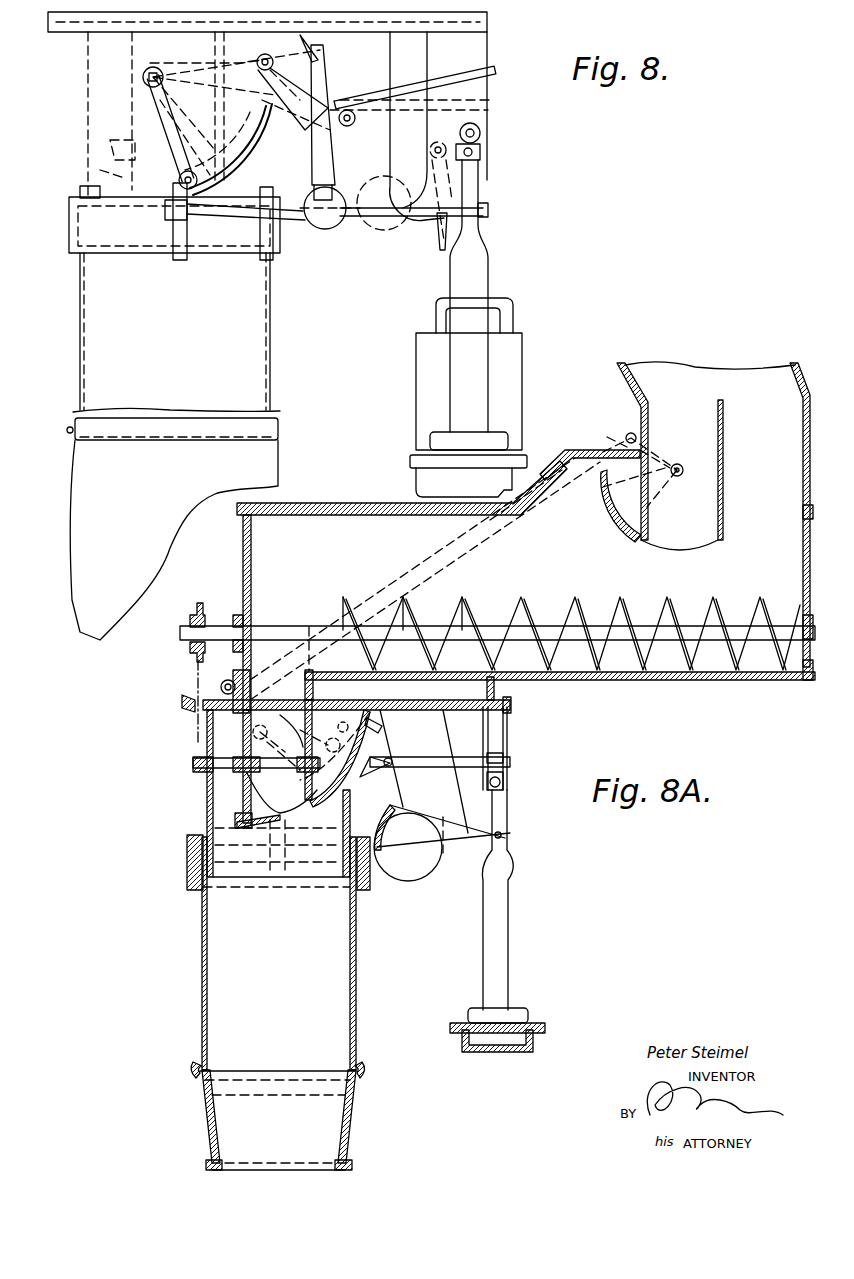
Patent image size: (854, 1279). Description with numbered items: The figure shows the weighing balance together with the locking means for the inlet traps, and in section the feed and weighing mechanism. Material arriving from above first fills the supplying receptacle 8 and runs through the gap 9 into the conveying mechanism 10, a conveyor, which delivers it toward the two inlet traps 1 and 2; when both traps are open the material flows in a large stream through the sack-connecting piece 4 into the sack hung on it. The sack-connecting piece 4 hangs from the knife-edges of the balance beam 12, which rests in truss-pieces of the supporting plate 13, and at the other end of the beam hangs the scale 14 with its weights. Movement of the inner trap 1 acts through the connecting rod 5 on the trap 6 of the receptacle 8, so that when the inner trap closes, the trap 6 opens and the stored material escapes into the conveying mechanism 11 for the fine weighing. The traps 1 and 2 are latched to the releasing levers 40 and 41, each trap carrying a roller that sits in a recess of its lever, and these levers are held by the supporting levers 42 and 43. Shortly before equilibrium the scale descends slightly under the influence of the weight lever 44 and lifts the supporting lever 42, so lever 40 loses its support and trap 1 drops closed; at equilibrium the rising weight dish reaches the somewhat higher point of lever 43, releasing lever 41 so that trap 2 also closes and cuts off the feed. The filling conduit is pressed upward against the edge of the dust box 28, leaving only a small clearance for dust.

In FIG. 8A, the inner inlet trap 1 is at (330, 825).
In FIG. 8, the exterior inlet trap 2 is at (231, 70).
In FIG. 8A, the exterior inlet trap 2 is at (333, 795).
In FIG. 8, the sack-connecting piece 4 is at (78, 323).
In FIG. 8A, the sack-connecting piece 4 is at (202, 945).
In FIG. 8A, the connecting rod 5 is at (620, 441).
In FIG. 8A, the trap of the supplying receptacle 6 is at (631, 540).
In FIG. 8A, the supplying receptacle 8 is at (706, 456).
In FIG. 8A, the gap 9 is at (765, 521).
In FIG. 8A, the conveying mechanism 10 is at (368, 503).
In FIG. 8A, the conveying mechanism 11 is at (530, 590).
In FIG. 8, the balance beam 12 is at (306, 178).
In FIG. 8A, the balance beam 12 is at (368, 813).
In FIG. 8A, the supporting plate 13 is at (511, 706).
In FIG. 8, the scale 14 is at (468, 310).
In FIG. 8A, the scale 14 is at (508, 904).
In FIG. 8, the dust box 28 is at (84, 141).
In FIG. 8A, the dust box 28 is at (207, 806).
In FIG. 8A, the releasing lever 40 is at (384, 723).
In FIG. 8, the releasing lever 41 is at (306, 58).
In FIG. 8, the supporting lever 42 is at (408, 88).
In FIG. 8A, the supporting lever 42 is at (425, 757).
In FIG. 8, the supporting lever 43 is at (405, 110).
In FIG. 8, the weight lever 44 is at (393, 235).